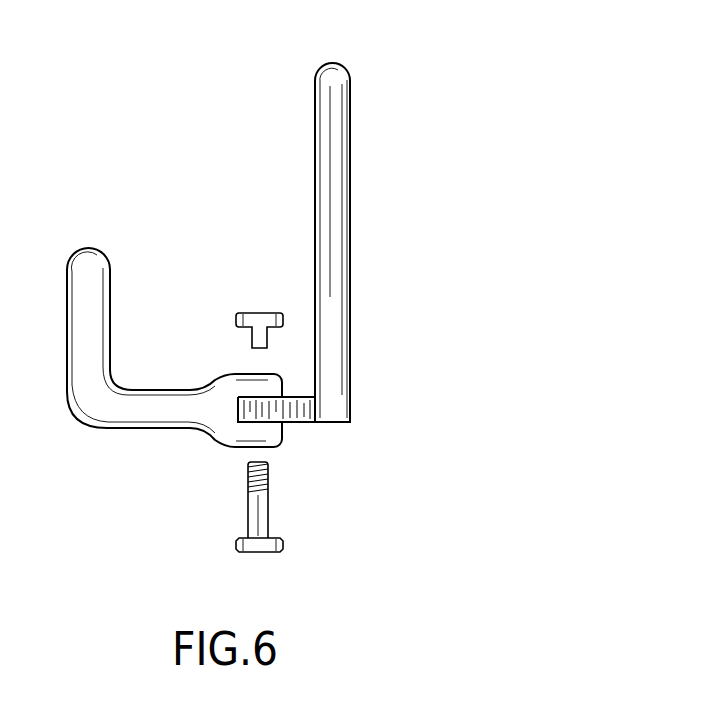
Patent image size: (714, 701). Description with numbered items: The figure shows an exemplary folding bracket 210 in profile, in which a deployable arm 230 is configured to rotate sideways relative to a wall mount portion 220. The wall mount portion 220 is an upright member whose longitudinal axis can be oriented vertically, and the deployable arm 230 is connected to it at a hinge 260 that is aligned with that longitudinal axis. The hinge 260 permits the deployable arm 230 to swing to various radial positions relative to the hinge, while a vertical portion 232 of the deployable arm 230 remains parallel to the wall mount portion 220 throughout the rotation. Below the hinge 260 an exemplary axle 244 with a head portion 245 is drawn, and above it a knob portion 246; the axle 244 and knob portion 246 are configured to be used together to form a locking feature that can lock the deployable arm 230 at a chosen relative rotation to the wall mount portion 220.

The bracket 210 is at (342, 62).
The wall mount portion 220 is at (351, 259).
The deployable arm 230 is at (72, 392).
The vertical portion 232 is at (74, 268).
The axle 244 is at (269, 507).
The head portion 245 is at (270, 551).
The knob portion 246 is at (252, 312).
The hinge 260 is at (233, 448).